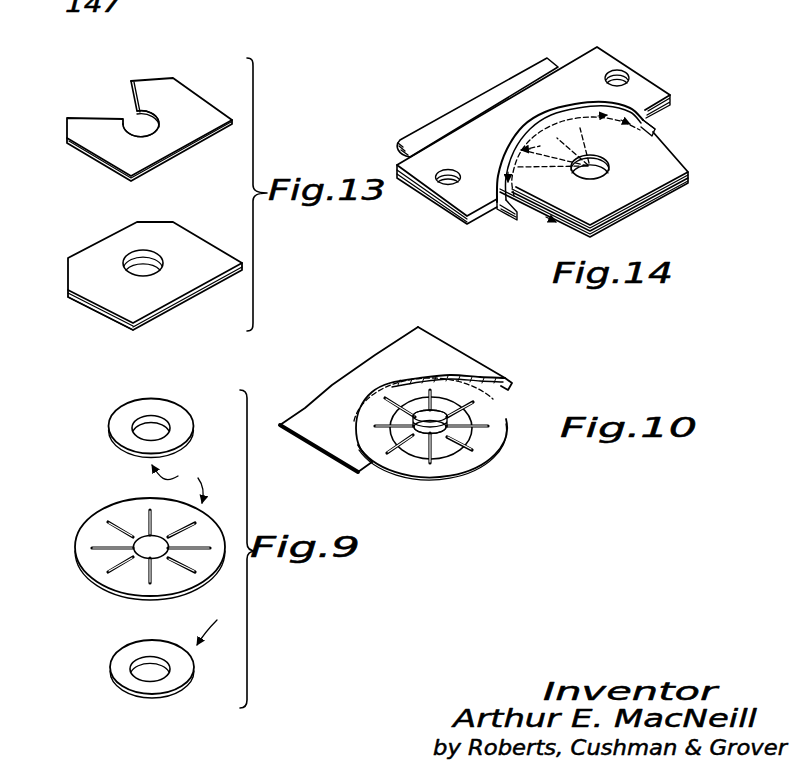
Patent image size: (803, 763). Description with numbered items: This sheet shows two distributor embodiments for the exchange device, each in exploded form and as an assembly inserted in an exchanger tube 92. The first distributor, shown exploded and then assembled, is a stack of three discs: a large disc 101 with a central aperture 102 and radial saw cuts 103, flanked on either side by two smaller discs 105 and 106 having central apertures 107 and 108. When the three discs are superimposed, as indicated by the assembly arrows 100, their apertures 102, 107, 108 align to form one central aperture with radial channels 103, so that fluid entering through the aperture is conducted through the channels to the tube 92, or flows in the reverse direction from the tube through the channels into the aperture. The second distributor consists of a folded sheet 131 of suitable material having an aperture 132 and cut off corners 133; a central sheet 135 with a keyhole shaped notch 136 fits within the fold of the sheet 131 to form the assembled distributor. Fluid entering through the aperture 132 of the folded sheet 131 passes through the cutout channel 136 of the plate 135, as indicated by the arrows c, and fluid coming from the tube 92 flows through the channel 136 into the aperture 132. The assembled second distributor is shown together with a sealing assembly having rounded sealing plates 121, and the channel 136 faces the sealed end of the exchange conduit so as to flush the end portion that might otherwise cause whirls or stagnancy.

In FIG. 14, the exchanger tube 92 is at (503, 198).
In FIG. 10, the exchanger tube 92 is at (437, 357).
In FIG. 9, the washer assembly 100 is at (194, 549).
In FIG. 10, the large disc 101 is at (487, 417).
In FIG. 9, the large disc 101 is at (92, 530).
In FIG. 10, the central aperture 102 is at (437, 428).
In FIG. 9, the central aperture 102 is at (148, 552).
In FIG. 10, the radial saw cuts 103 is at (473, 443).
In FIG. 9, the radial saw cuts 103 is at (108, 552).
In FIG. 10, the smaller disc 105 is at (417, 443).
In FIG. 9, the smaller disc 105 is at (118, 422).
In FIG. 9, the smaller disc 106 is at (118, 670).
In FIG. 10, the central aperture 107 is at (456, 471).
In FIG. 9, the central aperture 107 is at (148, 427).
In FIG. 10, the central aperture 108 is at (458, 490).
In FIG. 9, the central aperture 108 is at (150, 672).
In FIG. 14, the rounded sealing plate 121 is at (577, 75).
In FIG. 13, the folded sheet 131 is at (198, 245).
In FIG. 14, the folded sheet 131 is at (618, 183).
In FIG. 13, the aperture 132 is at (132, 260).
In FIG. 14, the aperture 132 is at (593, 170).
In FIG. 13, the cut off corners 133 is at (62, 272).
In FIG. 13, the central sheet 135 is at (178, 98).
In FIG. 14, the central sheet 135 is at (572, 226).
In FIG. 13, the keyhole shaped notch 136 is at (148, 127).
In FIG. 14, the keyhole shaped notch 136 is at (518, 152).
In FIG. 14, the arrows c is at (672, 148).